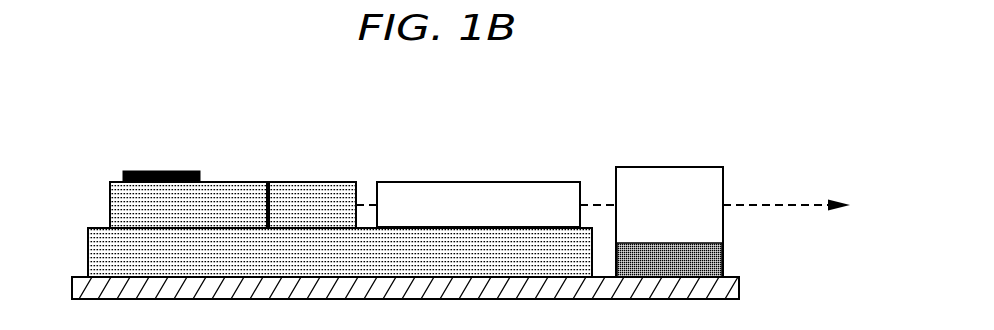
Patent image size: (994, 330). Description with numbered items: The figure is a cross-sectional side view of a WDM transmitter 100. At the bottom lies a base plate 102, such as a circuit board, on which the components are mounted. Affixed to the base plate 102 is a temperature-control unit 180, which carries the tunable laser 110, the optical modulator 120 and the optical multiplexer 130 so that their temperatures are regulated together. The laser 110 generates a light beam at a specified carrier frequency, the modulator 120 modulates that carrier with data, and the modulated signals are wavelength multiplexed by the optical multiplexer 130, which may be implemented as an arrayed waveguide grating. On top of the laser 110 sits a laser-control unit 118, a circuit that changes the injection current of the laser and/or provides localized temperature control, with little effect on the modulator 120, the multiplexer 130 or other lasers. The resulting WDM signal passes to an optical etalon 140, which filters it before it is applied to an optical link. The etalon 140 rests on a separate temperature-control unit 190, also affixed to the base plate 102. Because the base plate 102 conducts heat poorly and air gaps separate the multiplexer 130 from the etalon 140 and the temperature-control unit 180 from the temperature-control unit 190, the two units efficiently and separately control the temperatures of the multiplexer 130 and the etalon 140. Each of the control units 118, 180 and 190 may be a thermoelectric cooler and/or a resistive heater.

The WDM transmitter 100 is at (420, 77).
The base plate 102 is at (736, 292).
The tunable laser 110 is at (234, 181).
The laser-control unit 118 is at (163, 171).
The optical modulator 120 is at (316, 181).
The optical multiplexer 130 is at (483, 181).
The optical etalon 140 is at (670, 166).
The temperature-control unit 180 is at (88, 249).
The temperature-control unit 190 is at (724, 252).